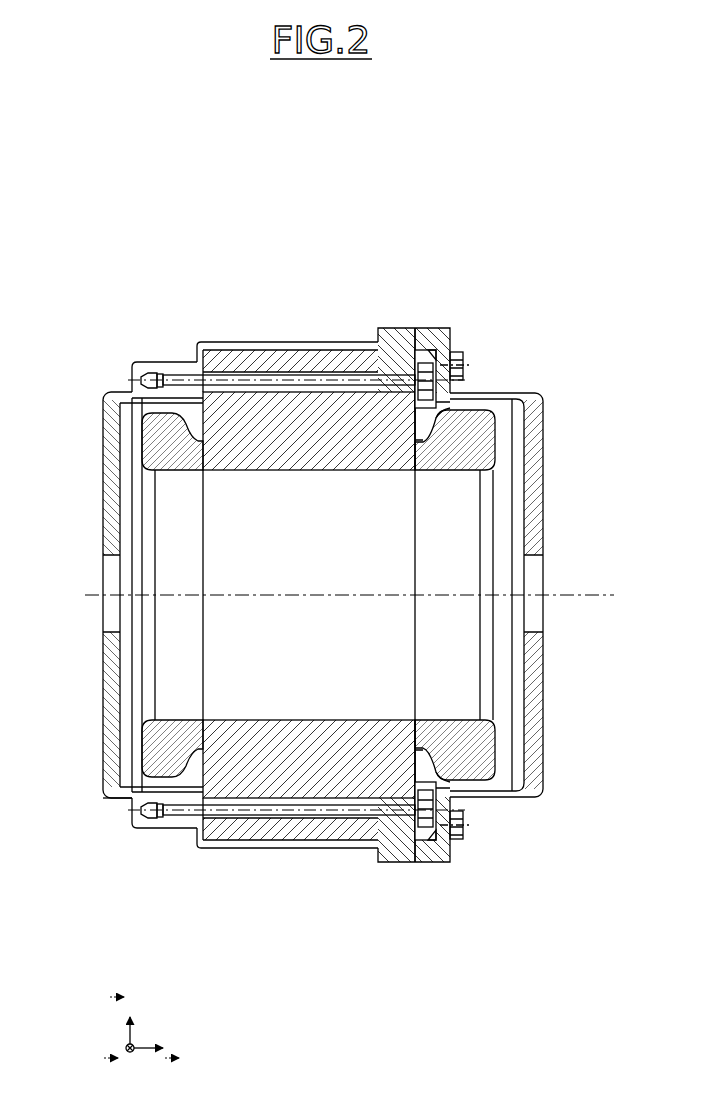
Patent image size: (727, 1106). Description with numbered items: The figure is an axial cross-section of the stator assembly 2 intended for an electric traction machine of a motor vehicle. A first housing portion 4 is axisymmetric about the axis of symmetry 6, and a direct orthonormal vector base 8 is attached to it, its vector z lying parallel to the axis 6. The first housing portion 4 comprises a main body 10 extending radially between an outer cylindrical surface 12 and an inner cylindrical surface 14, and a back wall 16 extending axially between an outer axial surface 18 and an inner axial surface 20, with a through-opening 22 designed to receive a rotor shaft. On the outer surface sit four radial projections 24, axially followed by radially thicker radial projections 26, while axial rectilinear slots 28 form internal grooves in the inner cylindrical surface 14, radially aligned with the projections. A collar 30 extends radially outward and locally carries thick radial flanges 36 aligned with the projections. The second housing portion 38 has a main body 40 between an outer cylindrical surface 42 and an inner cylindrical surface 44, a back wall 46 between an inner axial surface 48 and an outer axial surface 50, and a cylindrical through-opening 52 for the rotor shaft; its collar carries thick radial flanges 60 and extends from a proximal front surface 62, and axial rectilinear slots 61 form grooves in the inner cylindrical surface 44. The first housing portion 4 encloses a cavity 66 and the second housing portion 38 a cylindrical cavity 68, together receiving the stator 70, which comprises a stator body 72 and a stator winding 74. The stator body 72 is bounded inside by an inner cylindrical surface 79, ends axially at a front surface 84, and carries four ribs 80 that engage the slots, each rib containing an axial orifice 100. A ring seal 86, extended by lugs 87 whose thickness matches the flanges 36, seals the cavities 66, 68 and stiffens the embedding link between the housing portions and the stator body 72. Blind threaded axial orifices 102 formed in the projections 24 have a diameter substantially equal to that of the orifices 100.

The stator assembly 2 is at (70, 283).
The first housing portion 4 is at (100, 437).
The axis of symmetry 6 is at (607, 593).
The direct orthonormal vector base 8 is at (162, 1000).
The main body 10 is at (213, 339).
The outer cylindrical surface 12 is at (120, 807).
The inner cylindrical surface 14 is at (130, 778).
The back wall 16 is at (103, 502).
The outer axial surface 18 is at (102, 700).
The inner axial surface 20 is at (133, 663).
The through-opening 22 is at (108, 558).
The radial projections 24 is at (148, 362).
The radial projections 26 is at (235, 342).
The axial rectilinear slots 28 is at (268, 350).
The collar 30 is at (376, 329).
The radial flanges 36 is at (397, 328).
The second housing portion 38 is at (547, 462).
The main body 40 is at (522, 800).
The outer cylindrical surface 42 is at (482, 800).
The inner cylindrical surface 44 is at (507, 800).
The back wall 46 is at (543, 722).
The inner axial surface 48 is at (518, 523).
The outer axial surface 50 is at (543, 495).
The cylindrical through-opening 52 is at (530, 632).
The radial flanges 60 is at (440, 330).
The axial rectilinear slots 61 is at (431, 352).
The proximal front surface 62 is at (452, 855).
The cavity 66 is at (150, 404).
The cylindrical cavity 68 is at (473, 407).
The stator 70 is at (500, 427).
The stator body 72 is at (331, 432).
The stator winding 74 is at (496, 448).
The inner cylindrical surface 79 is at (337, 717).
The ribs 80 is at (281, 357).
The front surface 84 is at (189, 798).
The ring seal 86 is at (440, 778).
The lugs 87 is at (416, 350).
The axial orifices 100 is at (300, 815).
The axial orifices 102 is at (180, 383).